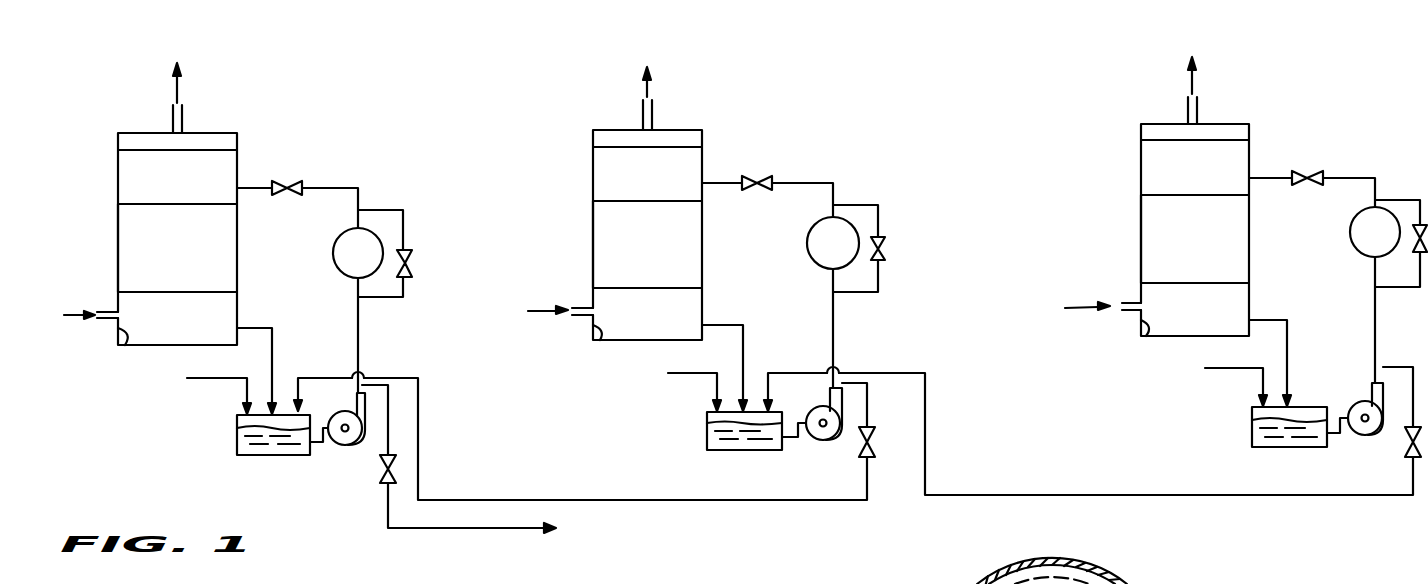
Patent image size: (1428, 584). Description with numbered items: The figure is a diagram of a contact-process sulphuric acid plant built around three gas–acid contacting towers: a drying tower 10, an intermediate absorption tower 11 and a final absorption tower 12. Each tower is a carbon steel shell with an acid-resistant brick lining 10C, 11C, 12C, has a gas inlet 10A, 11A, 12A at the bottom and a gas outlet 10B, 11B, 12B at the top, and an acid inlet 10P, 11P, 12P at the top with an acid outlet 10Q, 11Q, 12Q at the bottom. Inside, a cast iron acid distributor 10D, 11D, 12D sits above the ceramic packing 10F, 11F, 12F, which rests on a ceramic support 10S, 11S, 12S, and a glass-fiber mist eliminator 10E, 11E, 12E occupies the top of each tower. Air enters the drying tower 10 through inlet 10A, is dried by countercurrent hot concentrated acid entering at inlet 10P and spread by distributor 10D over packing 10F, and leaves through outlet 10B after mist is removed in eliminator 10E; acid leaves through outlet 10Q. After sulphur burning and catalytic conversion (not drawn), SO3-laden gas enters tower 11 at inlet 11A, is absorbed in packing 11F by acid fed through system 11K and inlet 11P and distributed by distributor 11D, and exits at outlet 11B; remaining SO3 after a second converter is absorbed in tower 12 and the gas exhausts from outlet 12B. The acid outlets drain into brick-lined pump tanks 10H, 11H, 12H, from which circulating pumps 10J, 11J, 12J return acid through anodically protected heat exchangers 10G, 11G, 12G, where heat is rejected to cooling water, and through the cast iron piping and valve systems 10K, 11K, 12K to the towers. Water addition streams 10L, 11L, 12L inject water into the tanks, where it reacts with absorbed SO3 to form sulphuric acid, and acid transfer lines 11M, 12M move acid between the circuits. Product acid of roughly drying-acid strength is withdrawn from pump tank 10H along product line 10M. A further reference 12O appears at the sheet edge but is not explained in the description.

The drying tower 10 is at (177, 253).
The gas outlet 10B is at (173, 118).
The mist eliminator 10E is at (142, 150).
The acid distributor 10D is at (142, 204).
The ceramic packing 10F is at (140, 230).
The ceramic support 10S is at (137, 292).
The gas inlet 10A is at (110, 310).
The acid-resistant brick lining 10C is at (122, 346).
The acid inlet 10P is at (240, 186).
The heat exchanger 10G is at (345, 250).
The acid outlet 10Q is at (252, 328).
The piping and valve system 10K is at (360, 338).
The water addition stream 10L is at (206, 379).
The pump tank 10H is at (286, 441).
The circulating pump 10J is at (345, 442).
The product line 10M is at (462, 530).
The intermediate absorption tower 11 is at (650, 253).
The gas outlet 11B is at (643, 112).
The mist eliminator 11E is at (615, 147).
The acid distributor 11D is at (612, 201).
The ceramic packing 11F is at (605, 228).
The ceramic support 11S is at (608, 288).
The gas inlet 11A is at (589, 308).
The acid-resistant brick lining 11C is at (602, 341).
The acid inlet 11P is at (714, 186).
The heat exchanger 11G is at (818, 243).
The acid outlet 11Q is at (714, 325).
The piping and valve system 11K is at (837, 331).
The water addition stream 11L is at (690, 375).
The pump tank 11H is at (736, 437).
The circulating pump 11J is at (823, 440).
The acid transfer line 11M is at (787, 501).
The final absorption tower 12 is at (1194, 253).
The gas outlet 12B is at (1188, 108).
The mist eliminator 12E is at (1160, 140).
The acid distributor 12D is at (1158, 195).
The ceramic packing 12F is at (1155, 218).
The ceramic support 12S is at (1158, 283).
The gas inlet 12A is at (1135, 303).
The acid-resistant brick lining 12C is at (1140, 338).
The acid inlet 12P is at (1258, 178).
The heat exchanger 12G is at (1366, 226).
The acid outlet 12Q is at (1256, 320).
The piping and valve system 12K is at (1375, 330).
The water addition stream 12L is at (1226, 371).
The pump tank 12H is at (1268, 434).
The circulating pump 12J is at (1367, 436).
The acid transfer line 12M is at (1286, 496).
The tower shell section 12O is at (1178, 583).